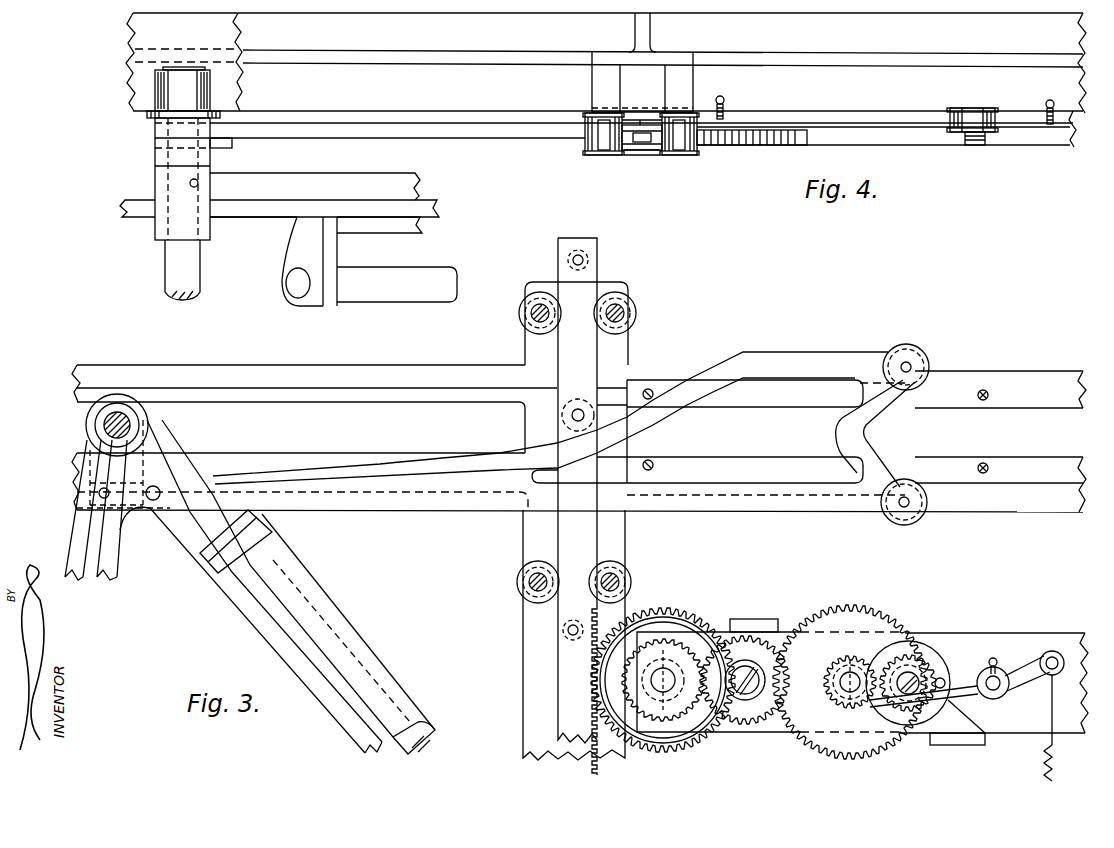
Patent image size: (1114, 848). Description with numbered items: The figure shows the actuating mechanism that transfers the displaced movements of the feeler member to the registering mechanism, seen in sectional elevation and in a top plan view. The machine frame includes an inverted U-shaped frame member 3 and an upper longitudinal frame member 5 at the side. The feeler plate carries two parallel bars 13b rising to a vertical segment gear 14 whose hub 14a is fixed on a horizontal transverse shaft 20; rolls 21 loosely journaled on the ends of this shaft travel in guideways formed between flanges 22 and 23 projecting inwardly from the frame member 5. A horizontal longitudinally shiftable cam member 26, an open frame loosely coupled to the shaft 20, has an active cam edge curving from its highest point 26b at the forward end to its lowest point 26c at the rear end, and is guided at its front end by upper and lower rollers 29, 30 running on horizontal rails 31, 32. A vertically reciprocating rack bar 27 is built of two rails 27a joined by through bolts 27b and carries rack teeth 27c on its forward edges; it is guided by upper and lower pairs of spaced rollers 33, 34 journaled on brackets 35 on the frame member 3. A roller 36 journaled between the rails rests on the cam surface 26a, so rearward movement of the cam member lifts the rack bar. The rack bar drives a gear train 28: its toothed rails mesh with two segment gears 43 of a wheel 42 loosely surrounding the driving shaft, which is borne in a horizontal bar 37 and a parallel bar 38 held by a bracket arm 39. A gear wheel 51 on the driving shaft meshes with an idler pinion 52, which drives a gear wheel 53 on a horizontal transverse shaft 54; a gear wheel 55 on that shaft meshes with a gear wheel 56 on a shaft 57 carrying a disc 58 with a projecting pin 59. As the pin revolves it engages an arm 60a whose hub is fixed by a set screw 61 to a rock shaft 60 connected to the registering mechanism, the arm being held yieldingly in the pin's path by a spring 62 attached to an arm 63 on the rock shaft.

In FIG. 4, the inverted U-shaped frame member 3 is at (606, 63).
In FIG. 4, the upper longitudinal frame member 5 is at (1040, 99).
In FIG. 3, the upper longitudinal frame member 5 is at (1000, 489).
In FIG. 4, the parallel bars 13b is at (397, 284).
In FIG. 3, the parallel bars 13b is at (363, 578).
In FIG. 4, the vertical segment gear 14 is at (401, 181).
In FIG. 3, the vertical segment gear 14 is at (237, 593).
In FIG. 3, the hub 14a is at (140, 420).
In FIG. 4, the horizontal transverse shaft 20 is at (194, 286).
In FIG. 3, the horizontal transverse shaft 20 is at (125, 415).
In FIG. 4, the rolls 21 is at (217, 68).
In FIG. 3, the rolls 21 is at (88, 422).
In FIG. 4, the flange 22 is at (608, 62).
In FIG. 3, the flange 22 is at (470, 398).
In FIG. 4, the flange 23 is at (133, 46).
In FIG. 3, the flange 23 is at (410, 455).
In FIG. 4, the cam member 26 is at (752, 131).
In FIG. 3, the cam member 26 is at (564, 445).
In FIG. 4, the cam surface 26a is at (222, 140).
In FIG. 3, the cam surface 26a is at (76, 470).
In FIG. 3, the highest point of cam edge 26b is at (733, 360).
In FIG. 3, the lowest point of cam edge 26c is at (215, 483).
In FIG. 4, the rack bar 27 is at (641, 166).
In FIG. 3, the rack bar 27 is at (591, 486).
In FIG. 4, the rails 27a is at (655, 99).
In FIG. 3, the rails 27a is at (574, 570).
In FIG. 4, the through bolts 27b is at (631, 157).
In FIG. 3, the through bolts 27b is at (588, 258).
In FIG. 3, the rack teeth 27c is at (590, 708).
In FIG. 3, the gear train 28 is at (771, 659).
In FIG. 4, the upper roller 29 is at (985, 108).
In FIG. 3, the upper roller 29 is at (916, 356).
In FIG. 3, the lower roller 30 is at (920, 512).
In FIG. 4, the horizontal longitudinal rail 31 is at (1028, 126).
In FIG. 3, the horizontal longitudinal rail 31 is at (1000, 391).
In FIG. 3, the horizontal longitudinal rail 32 is at (999, 469).
In FIG. 4, the upper pair of spaced rollers 33 is at (590, 128).
In FIG. 3, the upper pair of spaced rollers 33 is at (609, 309).
In FIG. 3, the lower pair of spaced rollers 34 is at (601, 592).
In FIG. 4, the brackets 35 is at (680, 80).
In FIG. 3, the brackets 35 is at (576, 323).
In FIG. 3, the roller / driving shaft 36 is at (578, 408).
In FIG. 3, the horizontal bar 37 is at (1006, 634).
In FIG. 3, the bar 38 is at (702, 640).
In FIG. 3, the transverse horizontal bracket arm 39 is at (780, 622).
In FIG. 3, the wheel 42 is at (674, 612).
In FIG. 3, the segment gears 43 is at (631, 612).
In FIG. 3, the gear wheel 51 is at (593, 672).
In FIG. 3, the idler pinion 52 is at (750, 724).
In FIG. 3, the gear wheel 53 is at (886, 621).
In FIG. 3, the horizontal transverse shaft 54 is at (862, 655).
In FIG. 3, the gear wheel 55 is at (850, 662).
In FIG. 3, the gear wheel 56 is at (906, 641).
In FIG. 3, the shaft 57 is at (918, 678).
In FIG. 3, the disc 58 is at (936, 674).
In FIG. 3, the pin 59 is at (946, 683).
In FIG. 3, the rock shaft 60 is at (1006, 690).
In FIG. 3, the arm 60a is at (965, 697).
In FIG. 3, the set screw 61 is at (1036, 662).
In FIG. 3, the spring 62 is at (1045, 753).
In FIG. 3, the arm 63 is at (1062, 655).